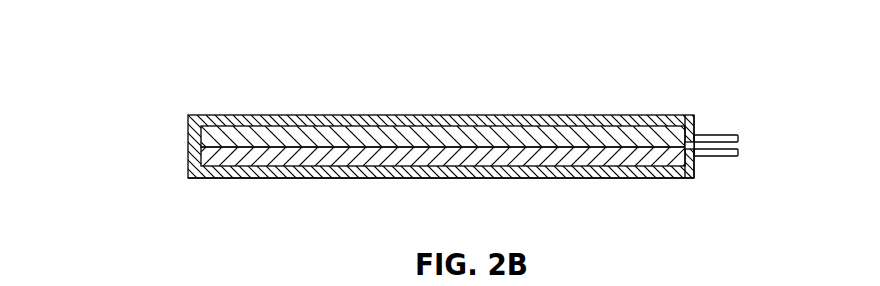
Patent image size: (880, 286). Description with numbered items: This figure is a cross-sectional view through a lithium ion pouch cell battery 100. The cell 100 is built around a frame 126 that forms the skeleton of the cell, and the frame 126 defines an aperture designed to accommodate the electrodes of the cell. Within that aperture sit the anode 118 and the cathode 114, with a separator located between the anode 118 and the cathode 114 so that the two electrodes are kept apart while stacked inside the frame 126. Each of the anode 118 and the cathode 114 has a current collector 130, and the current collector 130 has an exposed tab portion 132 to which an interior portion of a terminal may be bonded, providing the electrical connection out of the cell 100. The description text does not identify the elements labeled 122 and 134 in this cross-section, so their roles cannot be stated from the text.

The lithium ion pouch cell battery 100 is at (425, 131).
The cathode 114 is at (250, 127).
The anode 118 is at (223, 173).
The second electrode layer 122 is at (342, 150).
The frame 126 is at (440, 178).
The current collector 130 is at (687, 123).
The exposed tab portion 132 is at (692, 117).
The lead 134 is at (738, 140).